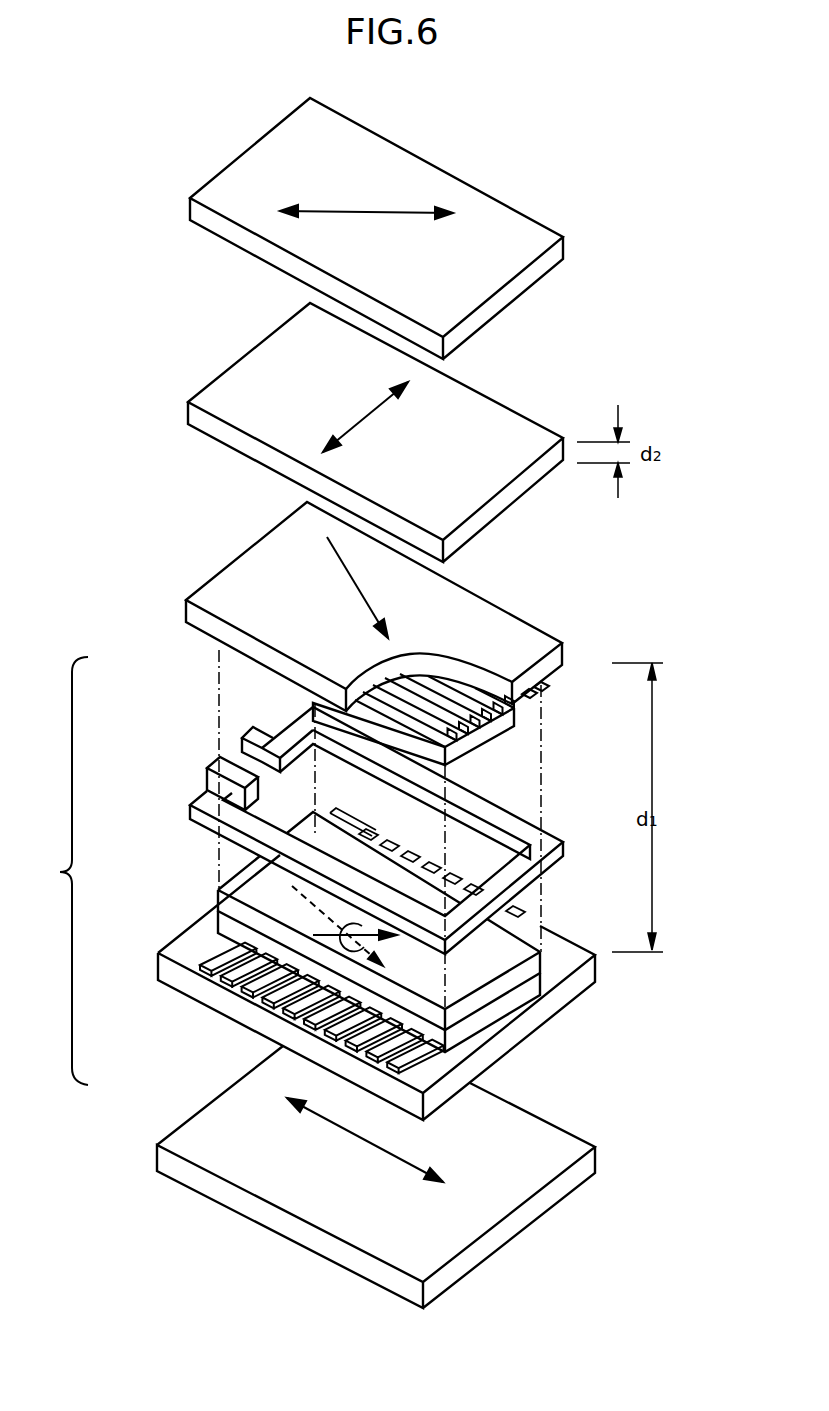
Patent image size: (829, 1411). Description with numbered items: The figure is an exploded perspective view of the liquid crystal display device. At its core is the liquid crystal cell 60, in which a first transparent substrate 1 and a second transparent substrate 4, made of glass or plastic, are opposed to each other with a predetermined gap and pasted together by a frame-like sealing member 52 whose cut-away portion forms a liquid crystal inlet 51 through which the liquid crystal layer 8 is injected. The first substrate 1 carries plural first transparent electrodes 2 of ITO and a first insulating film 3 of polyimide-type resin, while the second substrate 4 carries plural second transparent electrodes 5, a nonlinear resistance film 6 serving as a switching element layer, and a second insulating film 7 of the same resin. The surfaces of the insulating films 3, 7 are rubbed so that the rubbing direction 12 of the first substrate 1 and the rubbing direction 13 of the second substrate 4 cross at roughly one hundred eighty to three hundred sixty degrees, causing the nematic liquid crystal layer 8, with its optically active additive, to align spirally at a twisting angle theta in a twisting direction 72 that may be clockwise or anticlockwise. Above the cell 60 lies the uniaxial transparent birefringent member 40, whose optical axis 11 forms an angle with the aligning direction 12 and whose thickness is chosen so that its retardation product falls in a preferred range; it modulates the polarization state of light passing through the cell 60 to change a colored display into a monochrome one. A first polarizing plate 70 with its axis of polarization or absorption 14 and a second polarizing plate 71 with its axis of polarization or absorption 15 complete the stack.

The first transparent substrate 1 is at (500, 627).
The first transparent electrodes 2 is at (497, 722).
The first insulating film 3 is at (457, 747).
The second transparent substrate 4 is at (508, 1038).
The second transparent electrodes 5 is at (217, 950).
The nonlinear resistance film 6 is at (508, 992).
The second insulating film 7 is at (507, 1012).
The liquid crystal layer 8 is at (235, 688).
The optical axis of birefringent member 11 is at (357, 420).
The rubbing direction of first insulating film 12 is at (363, 600).
The rubbing direction of second insulating film 13 is at (330, 936).
The axis of polarization or absorption of first polarizing plate 14 is at (363, 205).
The axis of polarization or absorption of second polarizing plate 15 is at (370, 1145).
The birefringent member 40 is at (500, 502).
The liquid crystal inlet 51 is at (218, 745).
The sealing member 52 is at (217, 829).
The liquid crystal cell 60 is at (50, 884).
The first polarizing plate 70 is at (510, 294).
The second polarizing plate 71 is at (525, 1215).
The twisting direction 72 is at (380, 947).